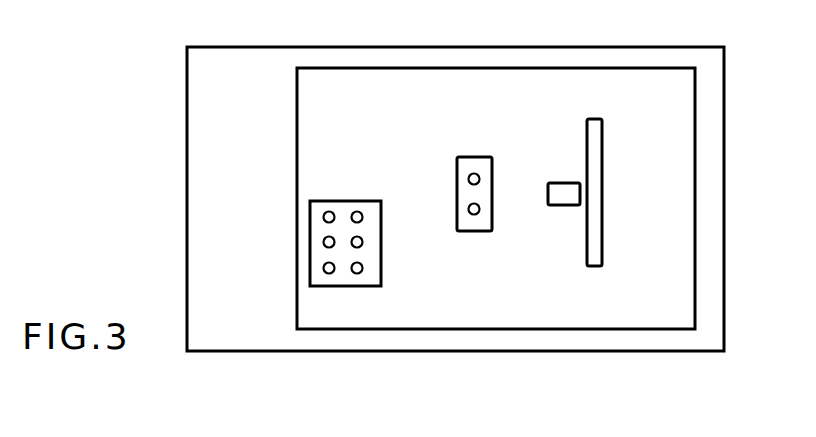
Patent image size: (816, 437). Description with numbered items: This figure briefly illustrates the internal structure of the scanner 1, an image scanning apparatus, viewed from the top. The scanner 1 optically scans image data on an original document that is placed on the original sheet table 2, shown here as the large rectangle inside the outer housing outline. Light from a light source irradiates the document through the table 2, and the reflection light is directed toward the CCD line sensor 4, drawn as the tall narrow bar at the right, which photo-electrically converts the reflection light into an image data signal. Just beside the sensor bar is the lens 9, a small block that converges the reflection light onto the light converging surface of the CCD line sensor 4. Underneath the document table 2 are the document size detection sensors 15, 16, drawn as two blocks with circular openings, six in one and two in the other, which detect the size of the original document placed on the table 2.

The scanner 1 is at (198, 196).
The original sheet table 2 is at (651, 68).
The CCD line sensor 4 is at (593, 119).
The lens 9 is at (562, 183).
The document size detection sensor 15 is at (345, 201).
The document size detection sensor 16 is at (475, 157).